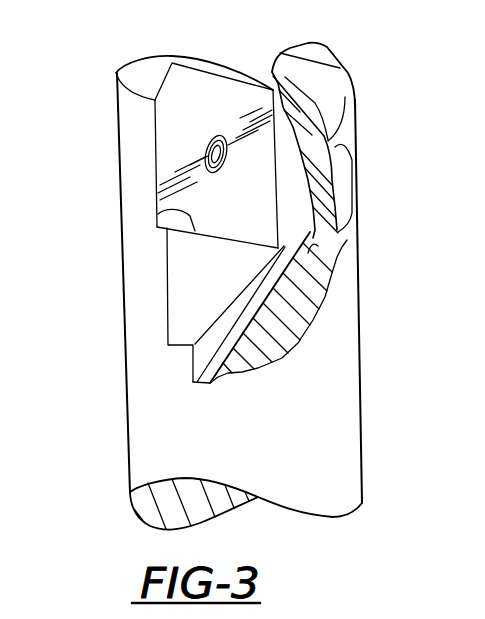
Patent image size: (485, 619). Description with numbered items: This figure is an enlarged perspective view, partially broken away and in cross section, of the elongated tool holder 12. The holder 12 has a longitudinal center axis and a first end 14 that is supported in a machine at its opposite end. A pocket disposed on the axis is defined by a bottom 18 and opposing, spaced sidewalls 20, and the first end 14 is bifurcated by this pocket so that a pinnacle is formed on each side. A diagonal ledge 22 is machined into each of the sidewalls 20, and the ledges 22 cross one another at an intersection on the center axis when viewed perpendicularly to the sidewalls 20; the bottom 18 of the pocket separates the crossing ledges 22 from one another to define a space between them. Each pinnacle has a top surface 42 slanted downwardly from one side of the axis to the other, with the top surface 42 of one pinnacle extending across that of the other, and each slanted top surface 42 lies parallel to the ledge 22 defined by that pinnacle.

The tool holder 12 is at (366, 349).
The first end 14 is at (114, 105).
The bottom 18 is at (197, 328).
The sidewalls 20 is at (192, 107).
The diagonal ledge 22 is at (157, 215).
The top surface 42 is at (220, 72).